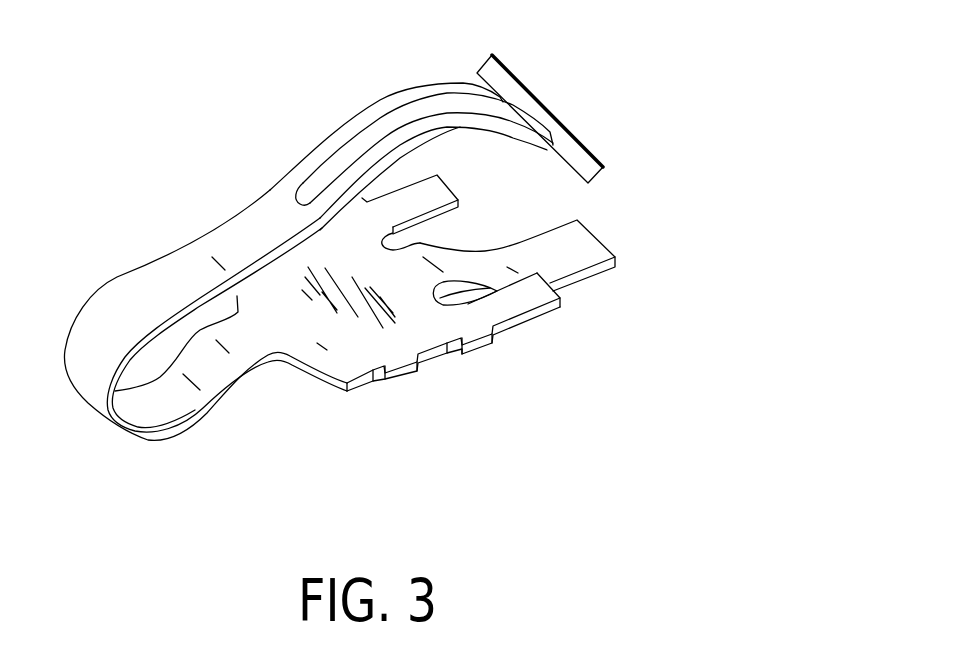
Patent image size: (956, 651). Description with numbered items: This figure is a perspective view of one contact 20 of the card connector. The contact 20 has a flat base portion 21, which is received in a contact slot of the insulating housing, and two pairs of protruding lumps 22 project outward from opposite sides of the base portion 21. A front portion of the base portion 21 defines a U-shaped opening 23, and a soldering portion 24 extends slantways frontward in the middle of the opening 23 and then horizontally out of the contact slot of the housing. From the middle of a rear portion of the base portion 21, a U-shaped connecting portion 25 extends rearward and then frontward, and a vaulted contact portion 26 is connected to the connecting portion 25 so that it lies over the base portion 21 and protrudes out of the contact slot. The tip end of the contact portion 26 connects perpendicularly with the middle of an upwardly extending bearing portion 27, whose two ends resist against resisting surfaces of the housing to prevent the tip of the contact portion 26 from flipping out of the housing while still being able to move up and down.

The contact 20 is at (93, 73).
The base portion 21 is at (312, 352).
The protruding lumps 22 is at (390, 362).
The U-shaped opening 23 is at (427, 233).
The soldering portion 24 is at (572, 252).
The U-shaped connecting portion 25 is at (196, 394).
The vaulted contact portion 26 is at (440, 105).
The bearing portion 27 is at (563, 140).